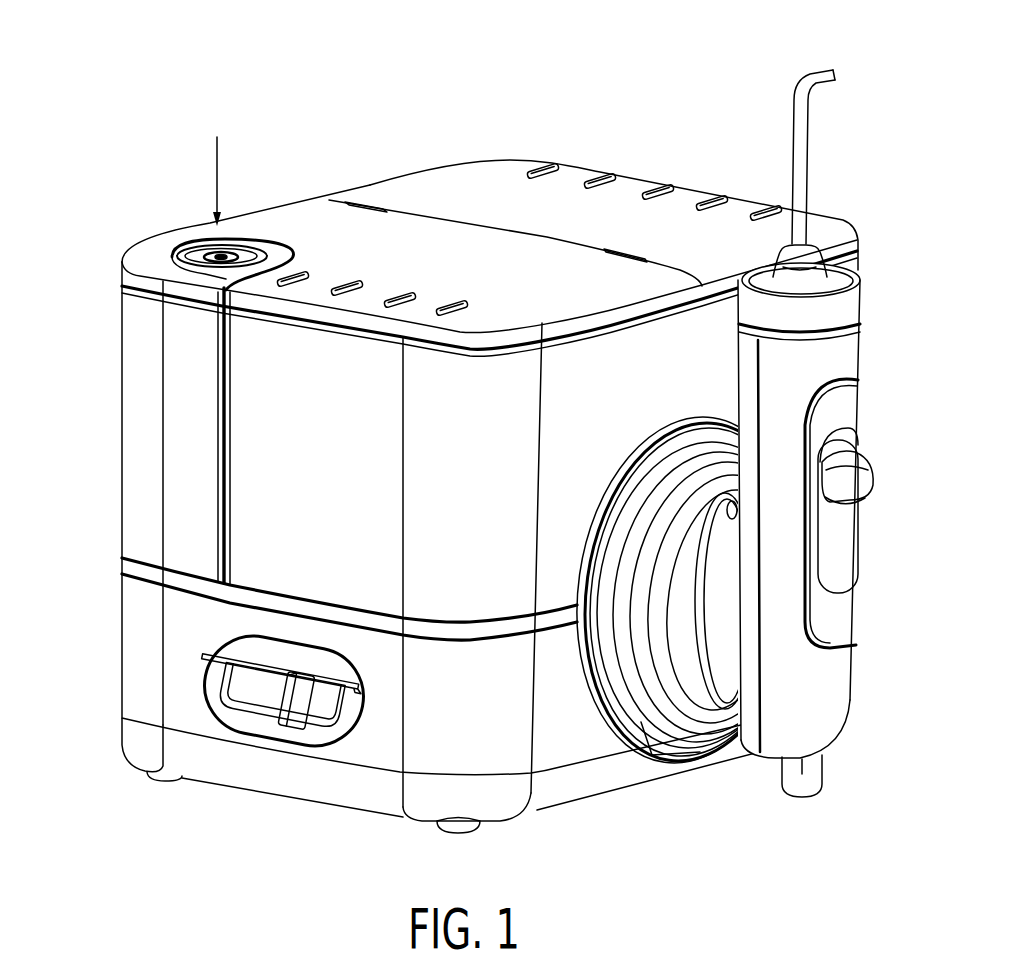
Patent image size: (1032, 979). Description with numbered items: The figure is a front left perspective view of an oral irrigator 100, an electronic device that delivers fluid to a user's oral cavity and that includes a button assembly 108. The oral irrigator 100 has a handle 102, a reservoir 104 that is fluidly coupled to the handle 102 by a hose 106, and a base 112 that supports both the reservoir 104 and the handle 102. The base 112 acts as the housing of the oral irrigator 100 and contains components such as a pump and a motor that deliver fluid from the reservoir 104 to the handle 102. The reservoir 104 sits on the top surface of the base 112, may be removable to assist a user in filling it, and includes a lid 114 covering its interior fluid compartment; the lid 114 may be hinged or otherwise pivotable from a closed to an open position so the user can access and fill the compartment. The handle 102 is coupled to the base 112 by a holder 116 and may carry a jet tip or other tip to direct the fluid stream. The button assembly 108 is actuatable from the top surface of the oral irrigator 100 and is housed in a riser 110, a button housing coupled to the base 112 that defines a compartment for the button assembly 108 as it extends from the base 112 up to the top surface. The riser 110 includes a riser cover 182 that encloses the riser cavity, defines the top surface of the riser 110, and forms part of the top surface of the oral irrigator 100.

The oral irrigator 100 is at (393, 140).
The handle 102 is at (832, 345).
The reservoir 104 is at (464, 483).
The hose 106 is at (657, 697).
The button assembly 108 is at (243, 247).
The riser 110 is at (142, 463).
The base 112 is at (240, 778).
The lid 114 is at (613, 200).
The holder 116 is at (710, 695).
The riser cover 182 is at (150, 251).